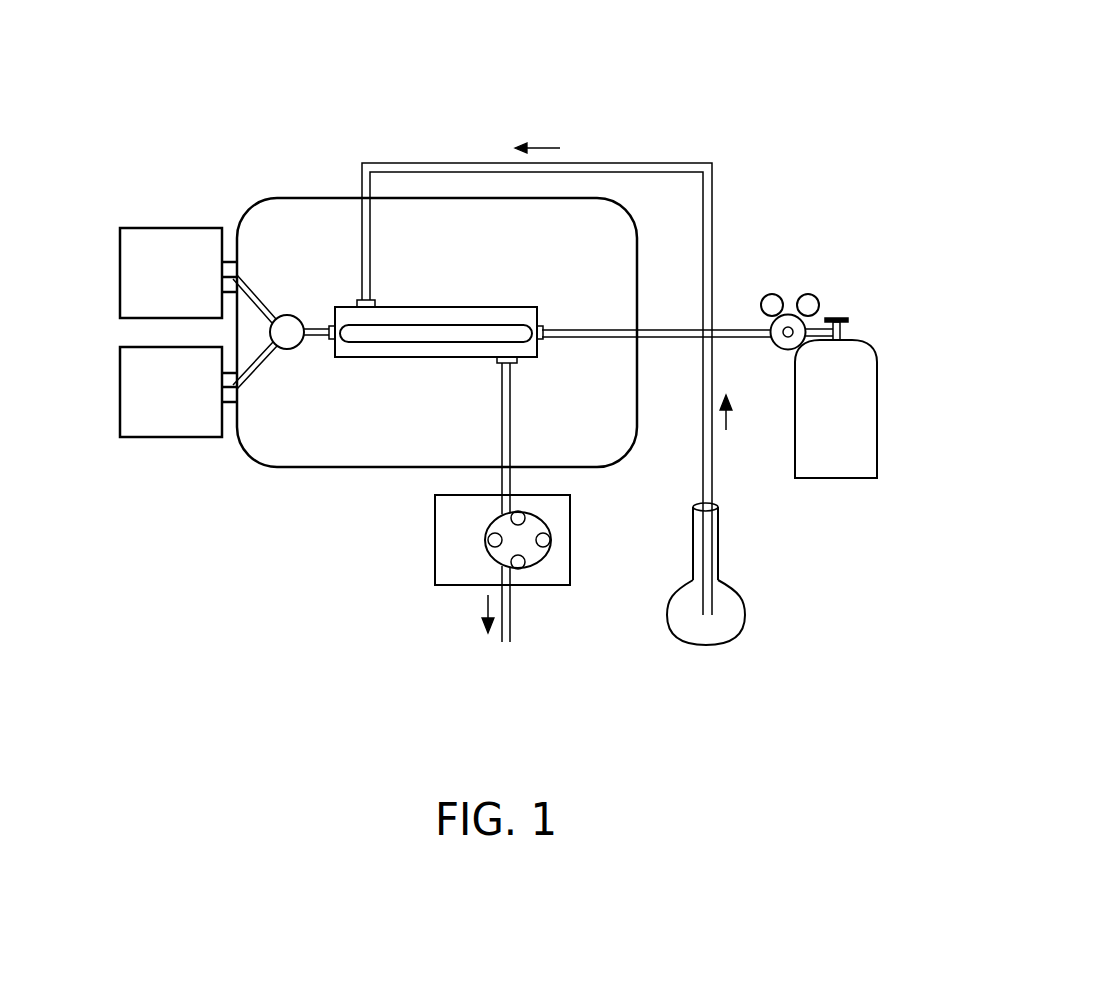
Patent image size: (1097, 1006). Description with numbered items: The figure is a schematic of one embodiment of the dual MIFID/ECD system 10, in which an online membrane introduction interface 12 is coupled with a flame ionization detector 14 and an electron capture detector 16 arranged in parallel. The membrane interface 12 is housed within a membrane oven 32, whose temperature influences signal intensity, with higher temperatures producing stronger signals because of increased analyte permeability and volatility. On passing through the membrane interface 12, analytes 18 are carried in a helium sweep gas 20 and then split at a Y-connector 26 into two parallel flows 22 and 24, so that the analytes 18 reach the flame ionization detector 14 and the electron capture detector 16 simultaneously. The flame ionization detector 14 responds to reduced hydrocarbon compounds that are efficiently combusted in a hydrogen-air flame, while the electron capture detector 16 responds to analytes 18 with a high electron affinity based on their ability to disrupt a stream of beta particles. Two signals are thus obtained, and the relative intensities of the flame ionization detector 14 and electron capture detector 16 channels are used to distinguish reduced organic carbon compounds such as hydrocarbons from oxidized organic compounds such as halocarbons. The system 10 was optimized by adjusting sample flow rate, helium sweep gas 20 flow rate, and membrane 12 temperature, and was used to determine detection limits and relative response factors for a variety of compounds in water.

The MIFID/ECD system 10 is at (662, 103).
The online membrane introduction interface 12 is at (502, 323).
The flame ionization detector 14 is at (142, 252).
The electron capture detector 16 is at (125, 380).
The analytes 18 is at (731, 622).
The helium sweep gas 20 is at (650, 331).
The first parallel flow 22 is at (257, 290).
The second parallel flow 24 is at (277, 362).
The Y-connector 26 is at (288, 326).
The membrane oven 32 is at (288, 218).